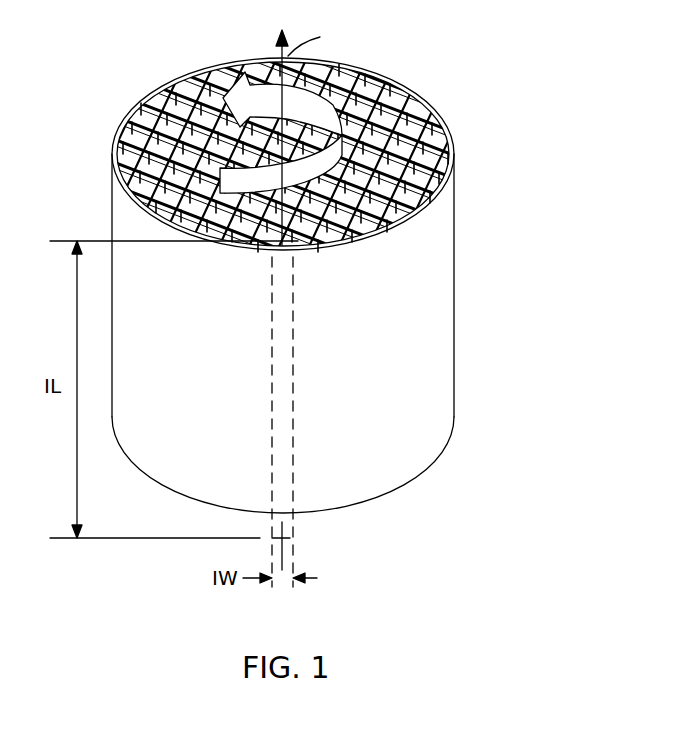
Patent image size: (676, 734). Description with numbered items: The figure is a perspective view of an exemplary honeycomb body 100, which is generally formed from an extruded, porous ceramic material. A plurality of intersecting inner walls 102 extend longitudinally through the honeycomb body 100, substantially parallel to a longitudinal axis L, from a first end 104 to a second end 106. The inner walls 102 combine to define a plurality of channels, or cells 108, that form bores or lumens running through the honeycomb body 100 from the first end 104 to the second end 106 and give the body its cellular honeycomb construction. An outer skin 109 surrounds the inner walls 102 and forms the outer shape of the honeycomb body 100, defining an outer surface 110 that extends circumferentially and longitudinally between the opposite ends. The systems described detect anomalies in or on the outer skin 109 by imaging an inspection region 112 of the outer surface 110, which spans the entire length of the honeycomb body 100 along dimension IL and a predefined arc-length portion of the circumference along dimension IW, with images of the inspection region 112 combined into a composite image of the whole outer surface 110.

The honeycomb body 100 is at (493, 69).
The inner walls 102 is at (402, 100).
The first end 104 is at (152, 66).
The second end 106 is at (372, 515).
The cells 108 is at (140, 114).
The outer skin 109 is at (455, 150).
The outer surface 110 is at (381, 347).
The inspection region 112 is at (281, 370).